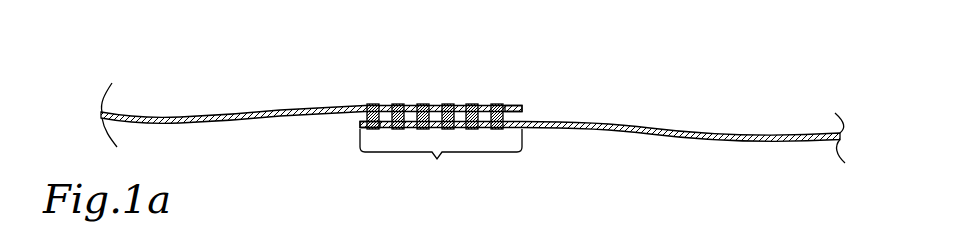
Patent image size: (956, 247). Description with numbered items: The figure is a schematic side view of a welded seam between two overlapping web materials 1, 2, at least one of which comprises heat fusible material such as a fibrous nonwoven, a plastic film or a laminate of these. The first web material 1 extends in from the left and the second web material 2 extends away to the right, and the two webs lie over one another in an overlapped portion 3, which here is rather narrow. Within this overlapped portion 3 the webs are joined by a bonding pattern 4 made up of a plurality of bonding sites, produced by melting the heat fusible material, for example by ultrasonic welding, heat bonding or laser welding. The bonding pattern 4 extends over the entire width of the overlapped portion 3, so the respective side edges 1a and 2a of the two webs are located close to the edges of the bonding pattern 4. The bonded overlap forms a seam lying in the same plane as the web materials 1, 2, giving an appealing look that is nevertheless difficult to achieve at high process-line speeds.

The web material 1 is at (242, 113).
The side edge of web material 1a is at (507, 104).
The web material 2 is at (653, 128).
The side edge of web material 2a is at (360, 122).
The overlapped portion 3 is at (441, 163).
The bonding pattern 4 is at (423, 104).